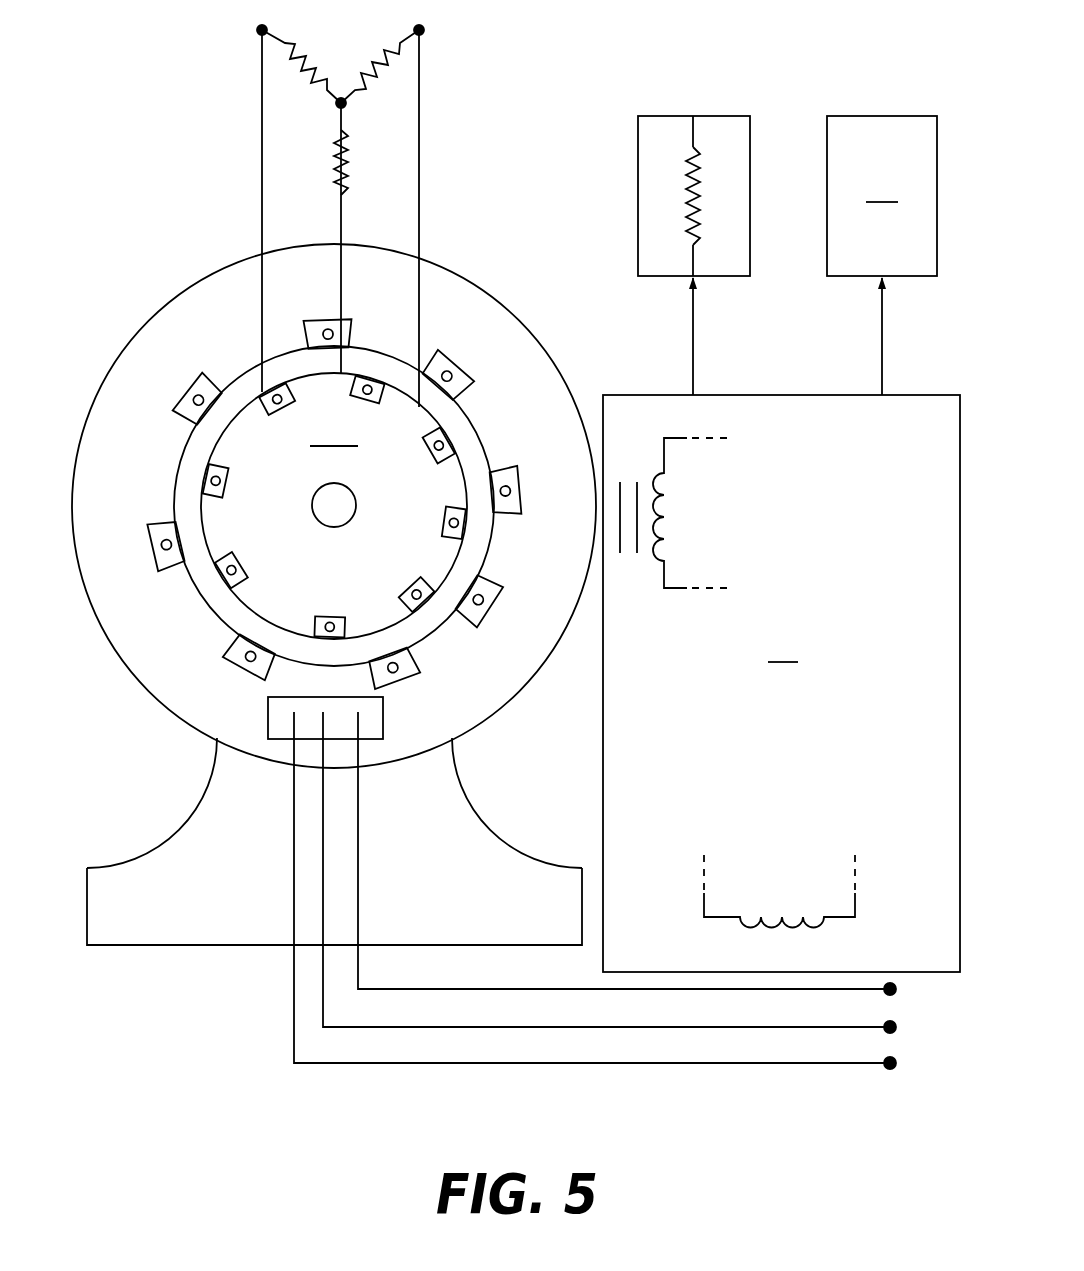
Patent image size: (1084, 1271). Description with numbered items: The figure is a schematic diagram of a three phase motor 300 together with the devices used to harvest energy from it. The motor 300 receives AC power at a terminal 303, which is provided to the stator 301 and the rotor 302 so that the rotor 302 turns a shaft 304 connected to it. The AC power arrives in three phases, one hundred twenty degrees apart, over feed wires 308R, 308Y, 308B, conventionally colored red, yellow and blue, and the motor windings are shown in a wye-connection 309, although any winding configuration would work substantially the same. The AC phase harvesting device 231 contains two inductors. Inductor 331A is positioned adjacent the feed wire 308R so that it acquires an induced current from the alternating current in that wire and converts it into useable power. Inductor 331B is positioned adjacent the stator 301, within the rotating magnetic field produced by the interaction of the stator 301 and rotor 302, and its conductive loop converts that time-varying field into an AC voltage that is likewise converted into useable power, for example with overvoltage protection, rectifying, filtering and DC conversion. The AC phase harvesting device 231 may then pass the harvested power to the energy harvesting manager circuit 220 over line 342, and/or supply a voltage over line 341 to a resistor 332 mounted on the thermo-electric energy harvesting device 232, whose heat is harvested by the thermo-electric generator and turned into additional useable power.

The three phase motor 300 is at (103, 380).
The stator 301 is at (128, 612).
The rotor 302 is at (260, 480).
The terminal 303 is at (280, 715).
The shaft 304 is at (328, 510).
The wye-connection 309 is at (245, 90).
The feed wire 308R is at (755, 990).
The feed wire 308Y is at (793, 1028).
The feed wire 308B is at (822, 1065).
The AC phase harvesting device 231 is at (781, 683).
The inductor 331A is at (800, 892).
The inductor 331B is at (702, 509).
The thermo-electric energy harvesting device 232 is at (650, 148).
The resistor 332 is at (674, 216).
The line 341 is at (690, 333).
The line 342 is at (880, 333).
The energy harvesting manager circuit 220 is at (882, 196).